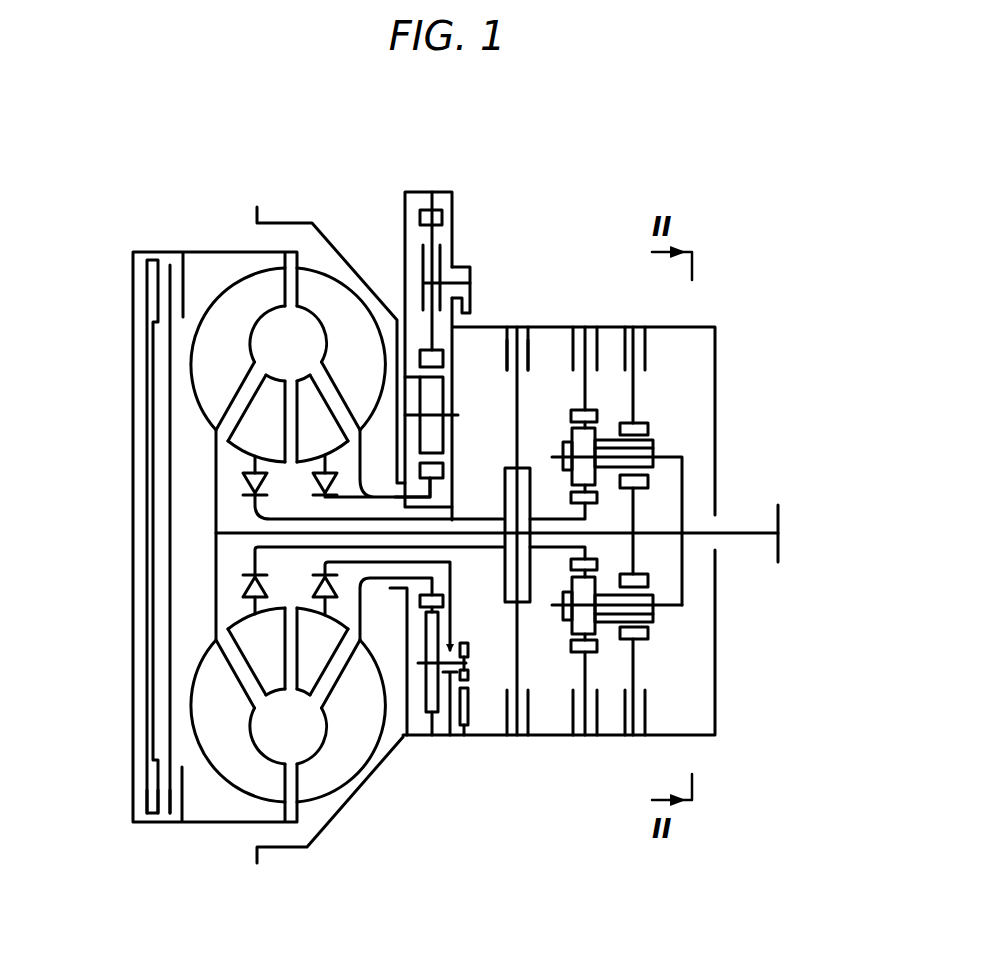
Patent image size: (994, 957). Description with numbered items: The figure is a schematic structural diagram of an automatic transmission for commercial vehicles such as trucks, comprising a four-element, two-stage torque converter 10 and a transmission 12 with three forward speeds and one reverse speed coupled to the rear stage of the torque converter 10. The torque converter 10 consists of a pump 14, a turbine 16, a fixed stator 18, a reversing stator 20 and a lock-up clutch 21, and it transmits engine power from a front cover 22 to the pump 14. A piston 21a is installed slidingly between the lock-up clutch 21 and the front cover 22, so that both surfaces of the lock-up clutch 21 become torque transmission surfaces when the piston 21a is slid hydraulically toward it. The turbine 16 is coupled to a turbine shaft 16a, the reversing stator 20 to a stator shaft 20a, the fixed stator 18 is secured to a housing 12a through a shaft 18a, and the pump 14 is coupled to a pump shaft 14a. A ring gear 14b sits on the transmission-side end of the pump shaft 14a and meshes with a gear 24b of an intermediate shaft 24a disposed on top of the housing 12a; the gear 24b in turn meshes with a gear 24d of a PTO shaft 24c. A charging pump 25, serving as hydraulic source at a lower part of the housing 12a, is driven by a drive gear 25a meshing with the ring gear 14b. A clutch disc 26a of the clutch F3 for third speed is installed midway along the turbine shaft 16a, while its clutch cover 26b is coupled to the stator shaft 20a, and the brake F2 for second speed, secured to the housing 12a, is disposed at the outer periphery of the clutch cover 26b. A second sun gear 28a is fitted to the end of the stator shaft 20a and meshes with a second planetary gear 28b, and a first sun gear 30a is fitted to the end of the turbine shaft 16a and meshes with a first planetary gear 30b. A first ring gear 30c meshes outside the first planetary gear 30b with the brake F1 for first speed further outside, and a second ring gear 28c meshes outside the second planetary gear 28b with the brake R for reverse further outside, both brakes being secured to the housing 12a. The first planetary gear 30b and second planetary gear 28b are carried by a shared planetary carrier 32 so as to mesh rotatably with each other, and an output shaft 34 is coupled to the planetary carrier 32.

The torque converter 10 is at (194, 224).
The transmission 12 is at (745, 296).
The housing 12a is at (487, 327).
The pump 14 is at (336, 366).
The pump shaft 14a is at (389, 582).
The ring gear 14b is at (425, 608).
The turbine 16 is at (206, 366).
The turbine shaft 16a is at (220, 533).
The fixed stator 18 is at (306, 438).
The shaft 18a is at (320, 484).
The reversing stator 20 is at (250, 438).
The stator shaft 20a is at (255, 504).
The lock-up clutch 21 is at (170, 291).
The piston 21a is at (133, 800).
The front cover 22 is at (133, 390).
The intermediate shaft 24a is at (445, 405).
The gear 24b is at (397, 320).
The PTO shaft 24c is at (462, 267).
The gear 24d is at (430, 210).
The charging pump 25 is at (468, 737).
The drive gear 25a is at (432, 737).
The clutch disc 26a is at (503, 548).
The clutch cover 26b is at (495, 737).
The second sun gear 28a is at (597, 497).
The second planetary gear 28b is at (655, 453).
The second ring gear 28c is at (590, 417).
The first sun gear 30a is at (650, 580).
The first planetary gear 30b is at (650, 633).
The first ring gear 30c is at (650, 640).
The planetary carrier 32 is at (655, 613).
The output shaft 34 is at (780, 548).
The brake F1 is at (660, 345).
The brake F2 is at (548, 345).
The clutch F3 is at (491, 495).
The brake R is at (608, 345).